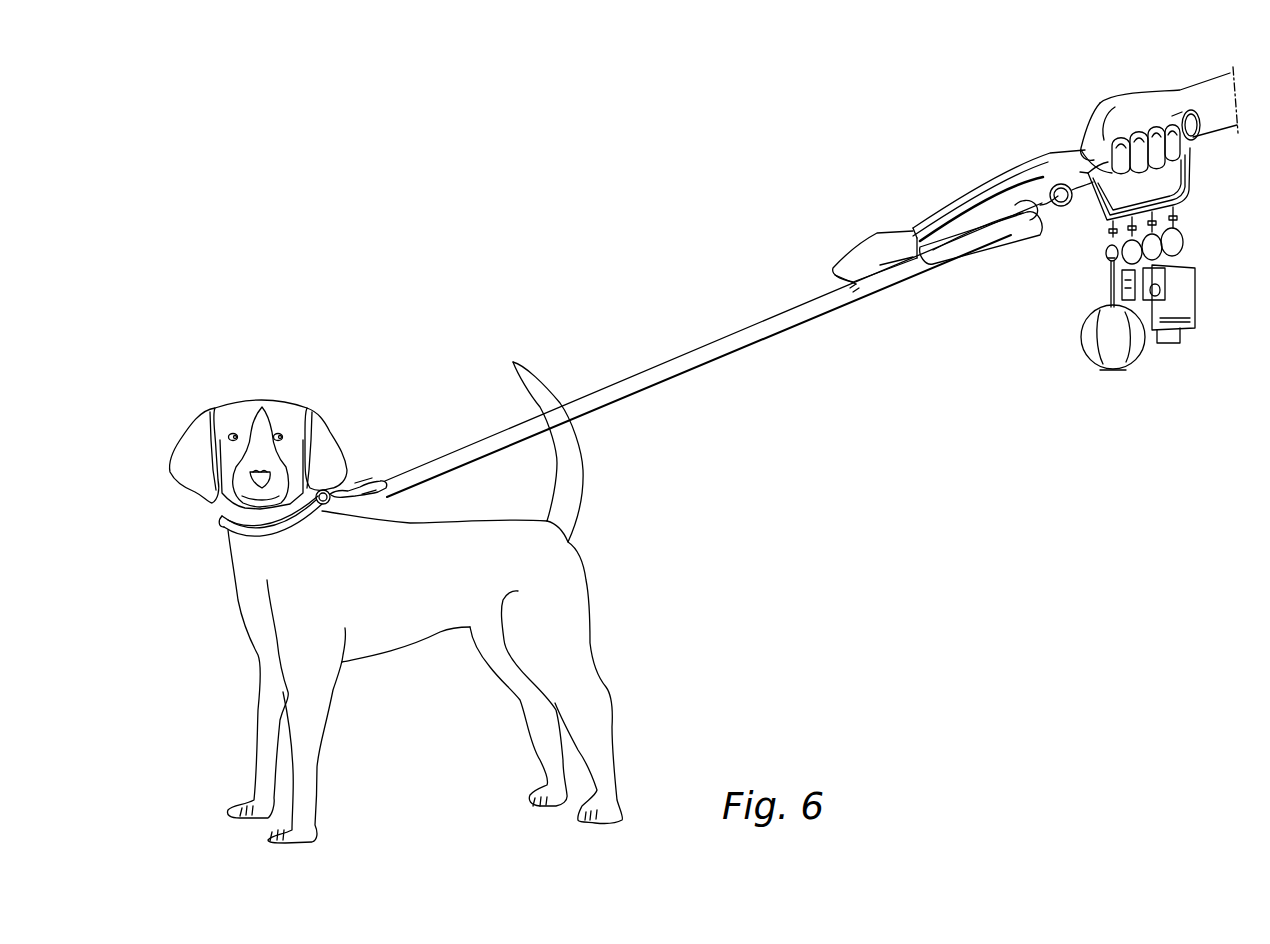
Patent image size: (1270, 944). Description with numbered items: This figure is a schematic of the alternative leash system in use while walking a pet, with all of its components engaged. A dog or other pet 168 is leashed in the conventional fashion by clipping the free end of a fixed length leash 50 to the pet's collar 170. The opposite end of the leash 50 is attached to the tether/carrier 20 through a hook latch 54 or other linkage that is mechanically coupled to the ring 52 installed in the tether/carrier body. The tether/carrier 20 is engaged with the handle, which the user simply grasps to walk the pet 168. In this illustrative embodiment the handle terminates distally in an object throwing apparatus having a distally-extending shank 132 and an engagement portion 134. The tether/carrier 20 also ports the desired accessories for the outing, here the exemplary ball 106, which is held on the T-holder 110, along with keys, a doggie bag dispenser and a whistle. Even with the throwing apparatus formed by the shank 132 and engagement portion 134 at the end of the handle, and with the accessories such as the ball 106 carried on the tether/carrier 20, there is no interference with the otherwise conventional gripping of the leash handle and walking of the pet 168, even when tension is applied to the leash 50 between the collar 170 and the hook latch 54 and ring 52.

The tether/carrier 20 is at (1200, 194).
The fixed length leash 50 is at (708, 338).
The ring 52 is at (1040, 202).
The hook latch 54 is at (1047, 228).
The ball 106 is at (1074, 341).
The T-holder 110 is at (1107, 280).
The distally-extending shank 132 is at (957, 200).
The engagement portion 134 is at (846, 251).
The pet 168 is at (262, 398).
The collar 170 is at (228, 527).